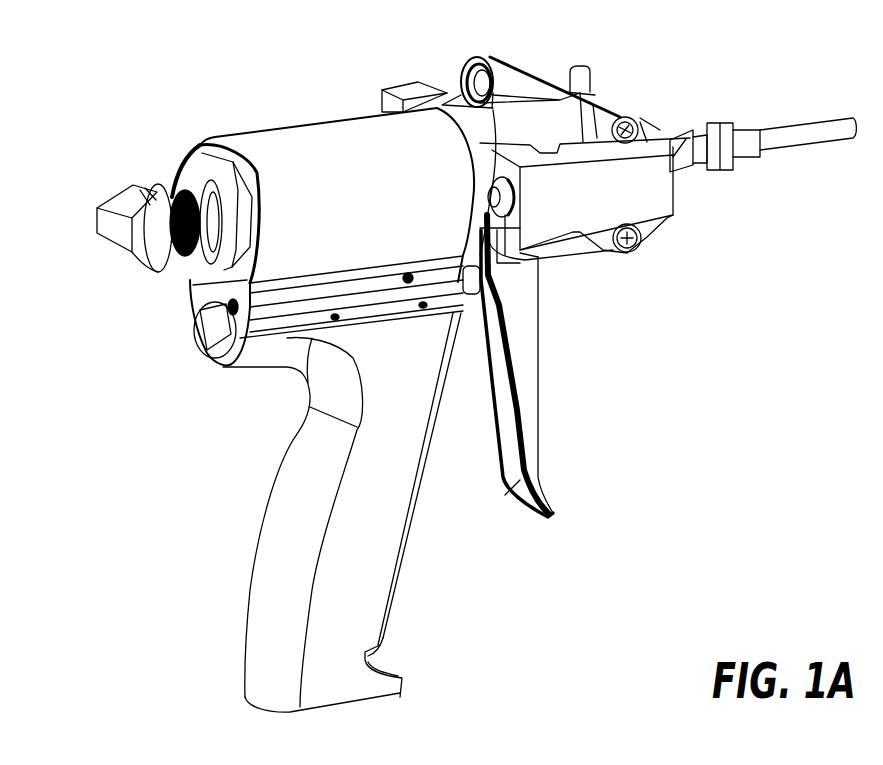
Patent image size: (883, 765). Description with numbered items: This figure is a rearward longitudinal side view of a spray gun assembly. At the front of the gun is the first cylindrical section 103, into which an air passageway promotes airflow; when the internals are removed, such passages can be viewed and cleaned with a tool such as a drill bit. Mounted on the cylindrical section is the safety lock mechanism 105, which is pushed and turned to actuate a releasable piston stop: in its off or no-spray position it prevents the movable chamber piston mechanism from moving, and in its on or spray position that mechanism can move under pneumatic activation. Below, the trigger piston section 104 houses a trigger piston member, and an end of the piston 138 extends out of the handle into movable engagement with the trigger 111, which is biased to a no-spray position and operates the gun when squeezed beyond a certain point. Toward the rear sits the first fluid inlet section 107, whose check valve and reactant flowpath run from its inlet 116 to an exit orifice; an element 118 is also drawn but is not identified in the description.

The first cylindrical section 103 is at (224, 132).
The trigger piston section 104 is at (233, 370).
The safety lock mechanism 105 is at (113, 233).
The first fluid inlet section 107 is at (650, 197).
The trigger 111 is at (530, 358).
The inlet 116 is at (487, 193).
The eyelet 118 is at (470, 70).
The piston 138 is at (488, 300).